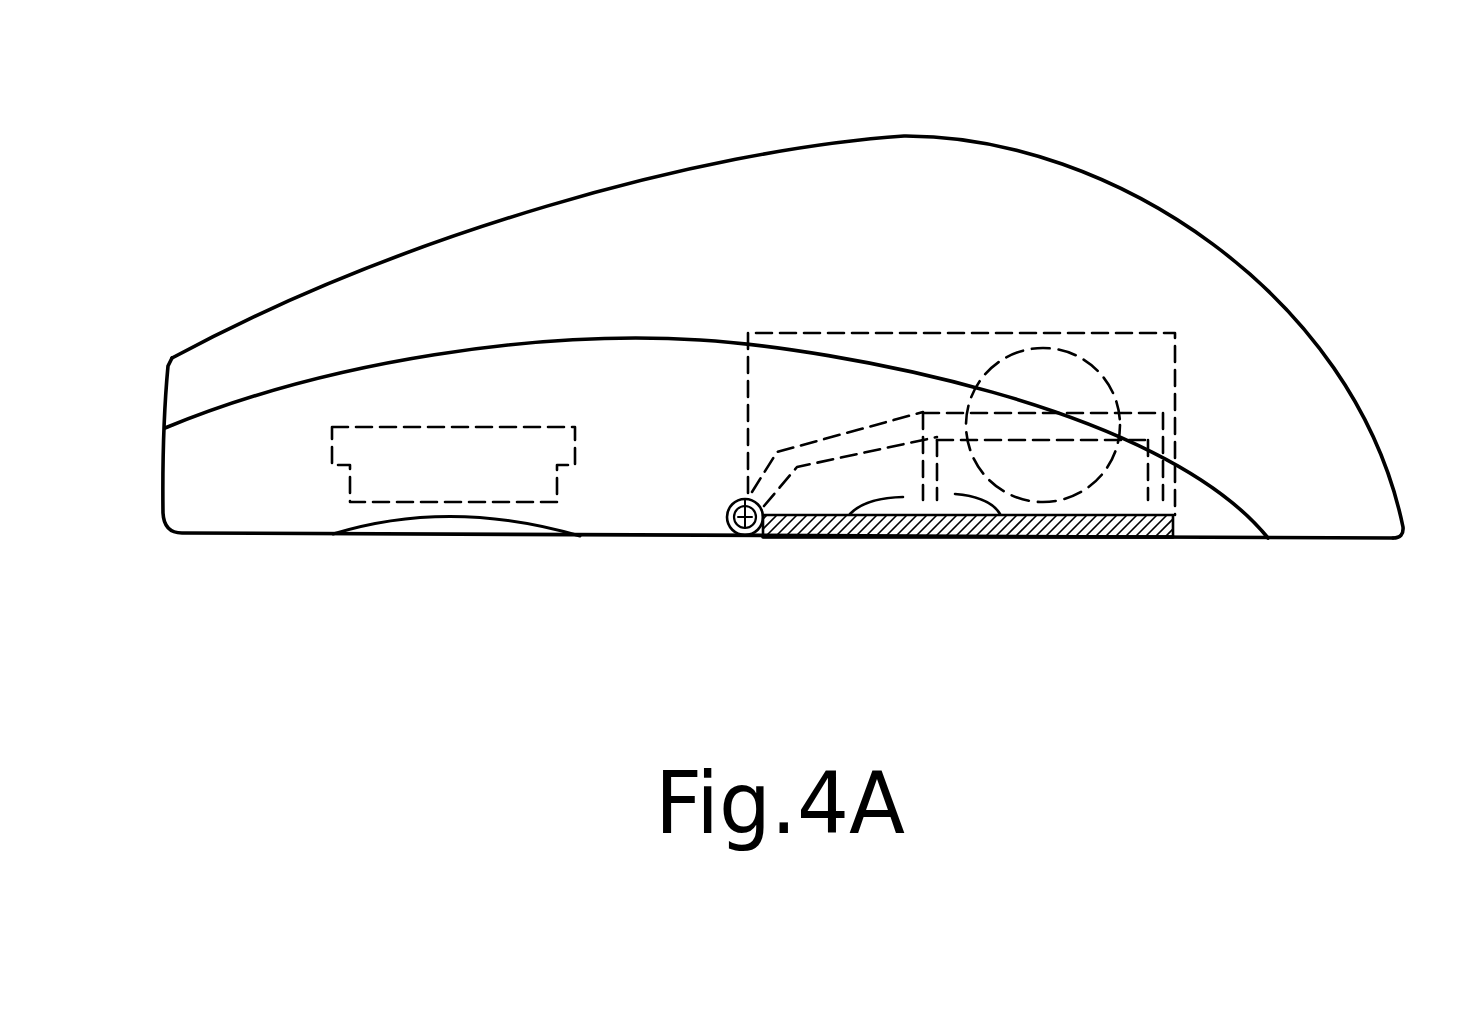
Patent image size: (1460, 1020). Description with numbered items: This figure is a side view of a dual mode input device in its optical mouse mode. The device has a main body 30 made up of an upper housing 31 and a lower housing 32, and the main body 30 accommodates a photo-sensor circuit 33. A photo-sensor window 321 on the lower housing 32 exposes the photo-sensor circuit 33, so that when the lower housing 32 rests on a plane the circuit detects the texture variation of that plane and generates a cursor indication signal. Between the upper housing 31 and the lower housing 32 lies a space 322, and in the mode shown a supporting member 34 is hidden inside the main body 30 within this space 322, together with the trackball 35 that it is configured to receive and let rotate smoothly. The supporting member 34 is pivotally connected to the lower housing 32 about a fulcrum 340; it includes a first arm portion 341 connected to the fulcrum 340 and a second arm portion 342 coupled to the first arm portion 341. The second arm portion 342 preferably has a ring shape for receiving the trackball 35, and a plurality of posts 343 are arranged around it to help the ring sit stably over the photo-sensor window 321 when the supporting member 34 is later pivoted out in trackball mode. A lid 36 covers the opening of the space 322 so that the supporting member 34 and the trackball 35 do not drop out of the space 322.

The main body 30 is at (940, 168).
The upper housing 31 is at (1298, 397).
The lower housing 32 is at (260, 510).
The photo-sensor window 321 is at (453, 525).
The space 322 is at (813, 537).
The photo-sensor circuit 33 is at (373, 490).
The supporting member 34 is at (1017, 538).
The fulcrum 340 is at (725, 518).
The first arm portion 341 is at (877, 436).
The second arm portion 342 is at (993, 425).
The posts 343 is at (931, 450).
The trackball 35 is at (1073, 473).
The lid 36 is at (888, 540).